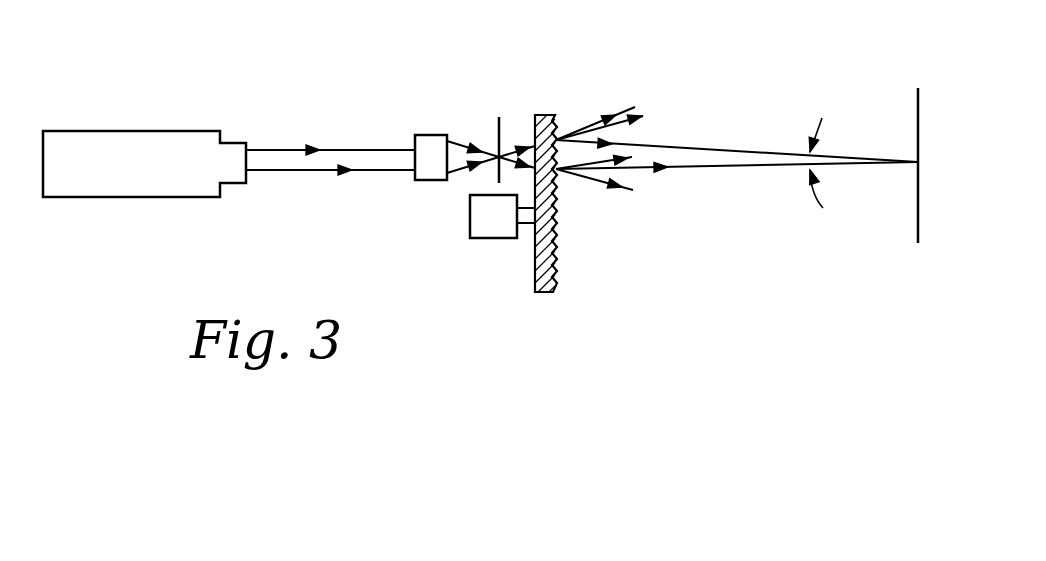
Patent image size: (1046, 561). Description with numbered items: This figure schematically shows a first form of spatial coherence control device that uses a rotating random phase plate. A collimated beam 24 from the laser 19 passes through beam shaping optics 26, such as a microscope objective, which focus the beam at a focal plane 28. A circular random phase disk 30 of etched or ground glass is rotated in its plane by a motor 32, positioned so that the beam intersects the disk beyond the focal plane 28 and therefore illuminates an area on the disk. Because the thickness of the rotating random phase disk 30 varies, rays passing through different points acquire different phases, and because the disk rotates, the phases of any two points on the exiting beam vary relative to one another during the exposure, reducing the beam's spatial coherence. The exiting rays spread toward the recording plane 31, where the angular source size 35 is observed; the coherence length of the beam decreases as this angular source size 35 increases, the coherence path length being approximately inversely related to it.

The laser 19 is at (158, 156).
The collimated beam 24 is at (365, 176).
The beam shaping optics 26 is at (440, 132).
The focal plane 28 is at (549, 71).
The circular random phase disk 30 is at (558, 283).
The recording plane 31 is at (916, 100).
The motor 32 is at (493, 228).
The angular source size 35 is at (843, 243).